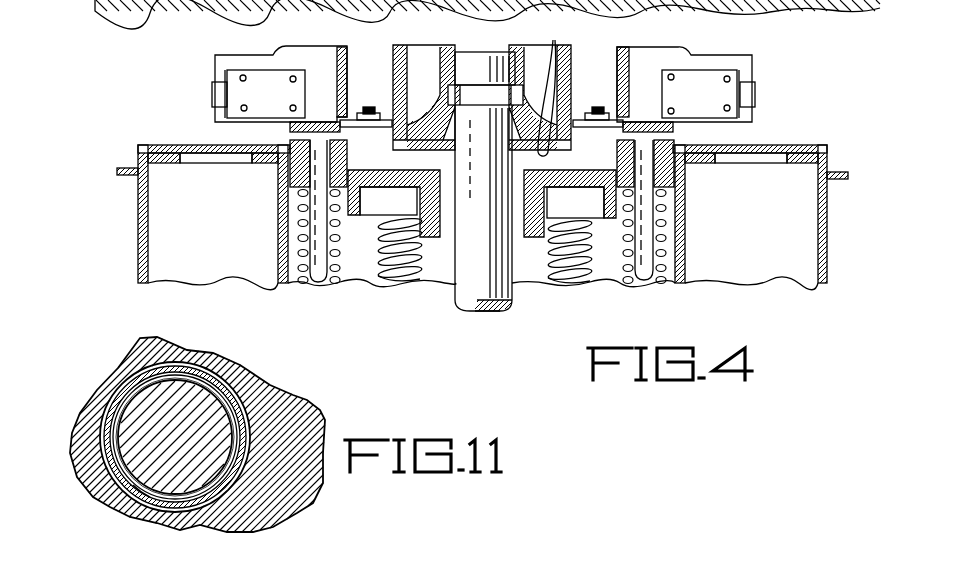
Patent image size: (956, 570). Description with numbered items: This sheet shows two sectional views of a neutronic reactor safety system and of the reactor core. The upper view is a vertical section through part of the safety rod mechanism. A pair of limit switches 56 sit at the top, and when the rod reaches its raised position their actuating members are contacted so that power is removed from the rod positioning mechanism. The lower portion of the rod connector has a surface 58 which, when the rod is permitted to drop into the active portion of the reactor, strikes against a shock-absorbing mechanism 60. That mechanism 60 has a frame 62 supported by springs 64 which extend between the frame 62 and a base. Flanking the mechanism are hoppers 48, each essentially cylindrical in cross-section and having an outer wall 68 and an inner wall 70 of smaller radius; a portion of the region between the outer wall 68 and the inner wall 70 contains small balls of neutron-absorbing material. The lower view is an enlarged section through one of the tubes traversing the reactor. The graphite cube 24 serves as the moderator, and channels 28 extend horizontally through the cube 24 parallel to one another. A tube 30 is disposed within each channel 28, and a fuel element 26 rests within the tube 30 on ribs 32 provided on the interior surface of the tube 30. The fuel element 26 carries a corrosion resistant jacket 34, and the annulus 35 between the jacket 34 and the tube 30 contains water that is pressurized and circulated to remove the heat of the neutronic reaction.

In FIG. 11, the cube 24 is at (273, 507).
In FIG. 11, the fuel elements 26 is at (178, 403).
In FIG. 11, the channels 28 is at (253, 398).
In FIG. 11, the tubes 30 is at (127, 383).
In FIG. 11, the ribs 32 is at (143, 500).
In FIG. 11, the corrosion resistant jackets 34 is at (117, 425).
In FIG. 11, the annulus 35 is at (117, 407).
In FIG. 4, the hopper 48 is at (137, 243).
In FIG. 4, the limit switches 56 is at (240, 112).
In FIG. 4, the surface 58 is at (551, 70).
In FIG. 4, the shock-absorbing mechanism 60 is at (593, 198).
In FIG. 4, the frame 62 is at (524, 270).
In FIG. 4, the springs 64 is at (378, 262).
In FIG. 4, the outer wall 68 is at (827, 248).
In FIG. 4, the inner wall 70 is at (685, 245).